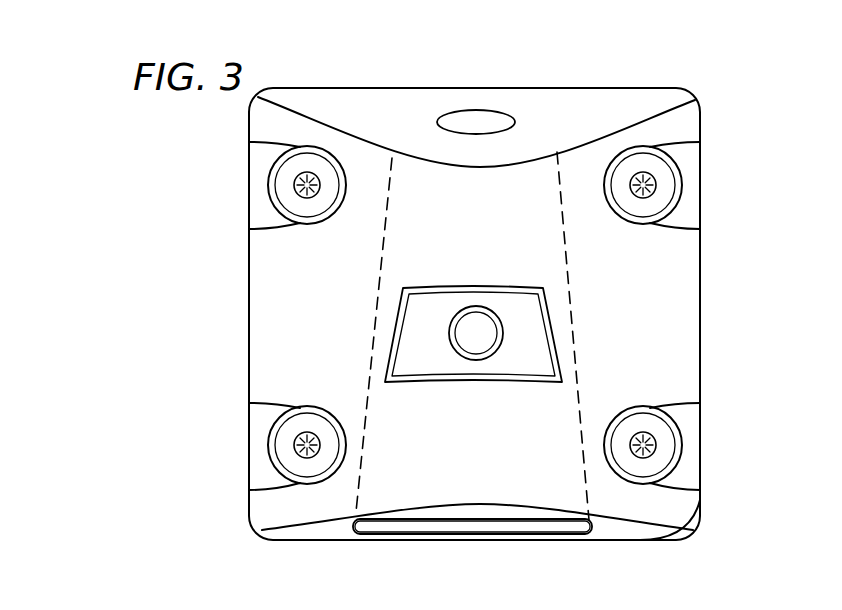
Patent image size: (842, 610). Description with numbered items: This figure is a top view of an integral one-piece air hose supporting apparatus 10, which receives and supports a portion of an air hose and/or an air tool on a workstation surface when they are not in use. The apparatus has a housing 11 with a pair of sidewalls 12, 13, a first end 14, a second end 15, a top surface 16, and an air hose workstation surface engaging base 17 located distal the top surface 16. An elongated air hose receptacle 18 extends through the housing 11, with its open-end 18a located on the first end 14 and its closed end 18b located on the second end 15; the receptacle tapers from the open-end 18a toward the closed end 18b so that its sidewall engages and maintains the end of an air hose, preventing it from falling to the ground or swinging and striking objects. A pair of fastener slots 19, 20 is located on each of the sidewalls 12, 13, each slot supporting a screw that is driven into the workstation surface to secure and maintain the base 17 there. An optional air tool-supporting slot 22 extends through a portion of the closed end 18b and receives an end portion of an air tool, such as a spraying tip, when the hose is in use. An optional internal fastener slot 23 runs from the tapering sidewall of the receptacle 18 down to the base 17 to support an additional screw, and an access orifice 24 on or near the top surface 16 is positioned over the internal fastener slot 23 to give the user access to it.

The air hose supporting apparatus 10 is at (676, 74).
The housing 11 is at (693, 527).
The sidewall 12 is at (277, 268).
The sidewall 13 is at (667, 357).
The first end 14 is at (613, 528).
The second end 15 is at (602, 107).
The top surface 16 is at (505, 493).
The air hose workstation surface engaging base 17 is at (700, 320).
The elongated air hose receptacle 18 is at (374, 348).
The open-end 18a is at (402, 535).
The closed end 18b is at (403, 168).
The fastener slot 19 is at (270, 183).
The fastener slot 20 is at (680, 187).
The air tool-supporting slot 22 is at (493, 106).
The internal fastener slot 23 is at (480, 375).
The access orifice 24 is at (553, 322).